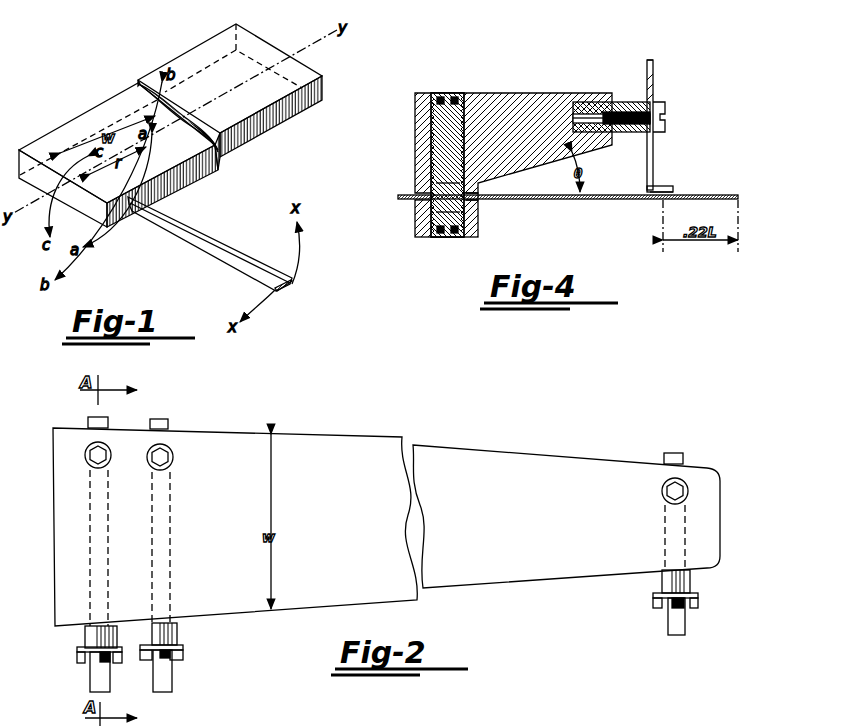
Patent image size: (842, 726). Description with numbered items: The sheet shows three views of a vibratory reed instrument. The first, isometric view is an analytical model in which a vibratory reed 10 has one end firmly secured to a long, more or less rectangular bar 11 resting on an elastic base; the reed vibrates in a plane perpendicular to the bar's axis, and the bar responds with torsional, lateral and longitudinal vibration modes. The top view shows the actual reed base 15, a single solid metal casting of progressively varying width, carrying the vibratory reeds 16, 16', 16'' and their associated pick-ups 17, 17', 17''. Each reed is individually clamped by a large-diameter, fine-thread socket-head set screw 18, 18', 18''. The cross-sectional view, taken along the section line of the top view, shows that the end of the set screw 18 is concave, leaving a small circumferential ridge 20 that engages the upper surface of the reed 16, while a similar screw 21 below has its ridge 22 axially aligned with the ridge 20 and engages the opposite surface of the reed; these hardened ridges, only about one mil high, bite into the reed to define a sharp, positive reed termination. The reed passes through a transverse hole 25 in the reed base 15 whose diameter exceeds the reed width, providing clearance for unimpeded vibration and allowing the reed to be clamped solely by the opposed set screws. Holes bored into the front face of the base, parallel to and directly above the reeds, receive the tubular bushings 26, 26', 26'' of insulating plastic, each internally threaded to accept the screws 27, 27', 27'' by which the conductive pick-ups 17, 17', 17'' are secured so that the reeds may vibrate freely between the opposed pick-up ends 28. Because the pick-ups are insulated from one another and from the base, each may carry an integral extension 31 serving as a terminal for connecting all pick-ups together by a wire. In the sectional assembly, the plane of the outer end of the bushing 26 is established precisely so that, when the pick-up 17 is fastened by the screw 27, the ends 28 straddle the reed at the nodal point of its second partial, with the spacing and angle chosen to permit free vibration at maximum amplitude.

In FIG. 1, the vibratory reed 10 is at (248, 262).
In FIG. 1, the bar 11 is at (223, 122).
In FIG. 4, the reed base 15 is at (532, 98).
In FIG. 2, the reed base 15 is at (341, 447).
In FIG. 4, the vibratory reed 16 is at (568, 213).
In FIG. 2, the vibratory reed 16 is at (84, 674).
In FIG. 2, the vibratory reed 16' is at (191, 673).
In FIG. 2, the vibratory reed 16'' is at (700, 623).
In FIG. 4, the pick-up 17 is at (670, 123).
In FIG. 2, the pick-up 17 is at (74, 662).
In FIG. 2, the pick-up 17' is at (187, 657).
In FIG. 2, the pick-up 17'' is at (702, 601).
In FIG. 4, the socket-head set screw 18 is at (459, 144).
In FIG. 2, the socket-head set screw 18 is at (80, 513).
In FIG. 2, the socket-head set screw 18' is at (181, 510).
In FIG. 2, the socket-head set screw 18'' is at (700, 501).
In FIG. 4, the circumferential ridge 20 is at (443, 187).
In FIG. 4, the screw 21 is at (430, 238).
In FIG. 4, the ridge 22 is at (437, 215).
In FIG. 4, the transverse hole 25 is at (477, 202).
In FIG. 4, the tubular bushing 26 is at (611, 90).
In FIG. 2, the tubular bushing 26 is at (73, 639).
In FIG. 2, the tubular bushing 26' is at (195, 635).
In FIG. 2, the tubular bushing 26'' is at (645, 586).
In FIG. 4, the screw 27 is at (682, 110).
In FIG. 2, the screw 27 is at (119, 672).
In FIG. 2, the screw 27' is at (144, 625).
In FIG. 2, the screw 27'' is at (645, 620).
In FIG. 4, the pick-up end 28 is at (672, 186).
In FIG. 4, the integral extension 31 is at (652, 60).